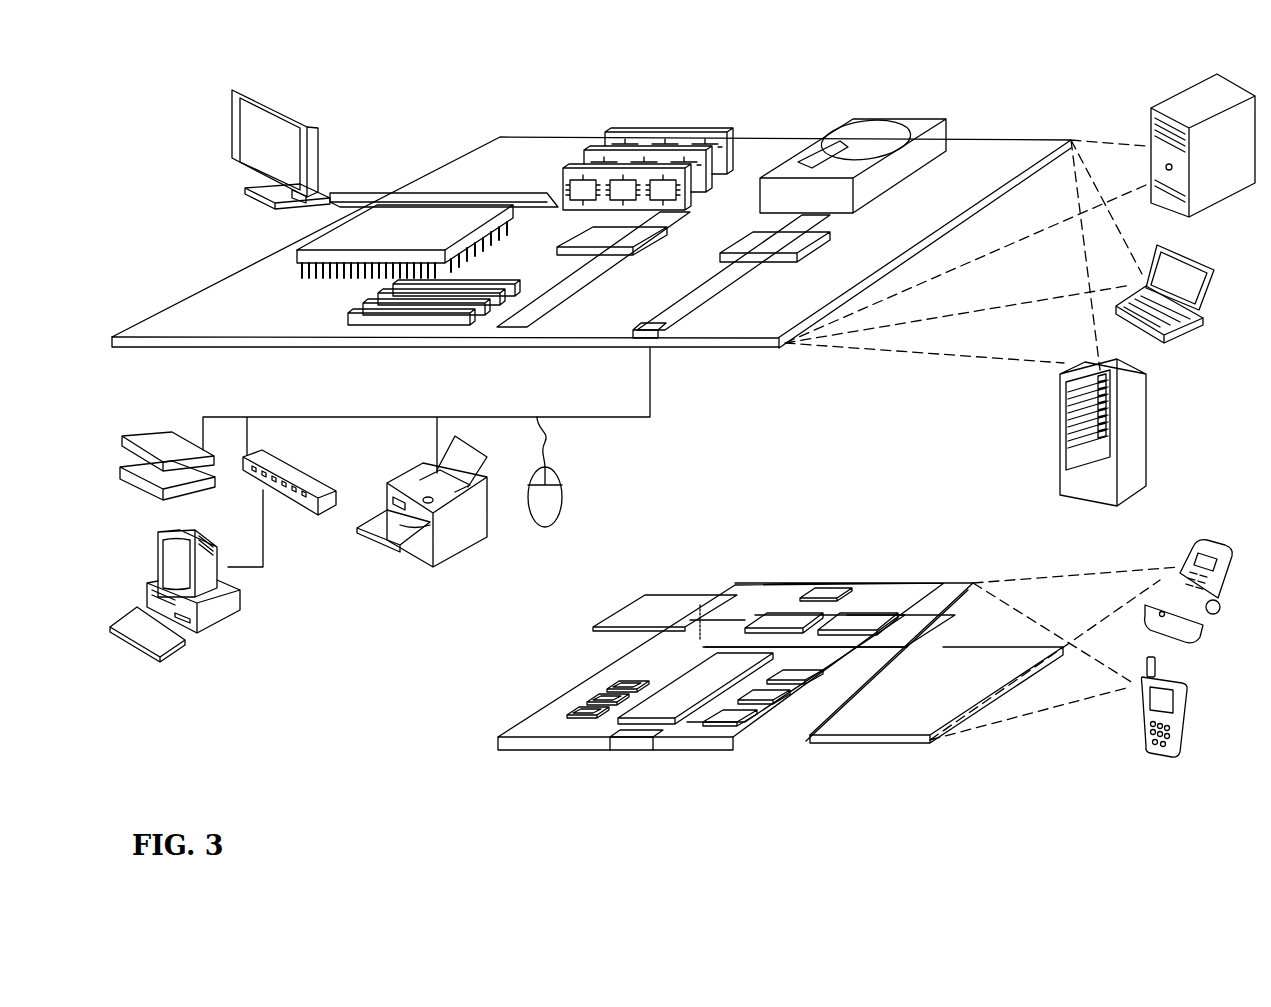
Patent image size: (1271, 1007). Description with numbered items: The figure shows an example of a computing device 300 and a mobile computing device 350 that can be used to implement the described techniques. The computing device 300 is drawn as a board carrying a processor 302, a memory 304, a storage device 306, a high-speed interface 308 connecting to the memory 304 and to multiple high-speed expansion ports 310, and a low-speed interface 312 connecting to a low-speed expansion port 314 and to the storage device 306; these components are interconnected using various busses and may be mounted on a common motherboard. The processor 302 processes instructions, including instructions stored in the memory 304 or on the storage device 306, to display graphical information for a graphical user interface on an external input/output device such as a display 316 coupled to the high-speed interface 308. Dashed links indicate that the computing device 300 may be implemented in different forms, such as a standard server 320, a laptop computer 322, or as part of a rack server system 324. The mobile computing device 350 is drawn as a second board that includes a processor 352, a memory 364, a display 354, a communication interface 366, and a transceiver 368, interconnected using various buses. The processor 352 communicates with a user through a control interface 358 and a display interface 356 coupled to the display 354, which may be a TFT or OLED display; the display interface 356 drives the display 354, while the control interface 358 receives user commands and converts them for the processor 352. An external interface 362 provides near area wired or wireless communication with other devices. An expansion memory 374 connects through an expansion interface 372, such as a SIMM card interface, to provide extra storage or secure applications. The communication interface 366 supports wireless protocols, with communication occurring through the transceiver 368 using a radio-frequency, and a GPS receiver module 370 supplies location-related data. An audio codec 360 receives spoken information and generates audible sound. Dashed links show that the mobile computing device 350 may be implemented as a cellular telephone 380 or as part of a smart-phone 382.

The computing device 300 is at (419, 112).
The processor 302 is at (297, 257).
The memory 304 is at (613, 135).
The storage device 306 is at (848, 122).
The high-speed interface 308 is at (590, 240).
The high-speed expansion ports 310 is at (367, 309).
The low-speed interface 312 is at (757, 240).
The low-speed expansion port 314 is at (655, 340).
The display 316 is at (232, 90).
The standard server 320 is at (1140, 124).
The laptop computer 322 is at (1193, 272).
The rack server system 324 is at (1060, 456).
The mobile computing device 350 is at (470, 752).
The processor 352 is at (670, 707).
The display 354 is at (897, 723).
The display interface 356 is at (737, 717).
The control interface 358 is at (767, 693).
The audio codec 360 is at (795, 673).
The external interface 362 is at (637, 740).
The memory 364 is at (587, 702).
The communication interface 366 is at (783, 620).
The transceiver 368 is at (863, 620).
The GPS receiver module 370 is at (837, 587).
The expansion interface 372 is at (720, 595).
The expansion memory 374 is at (643, 596).
The cellular telephone 380 is at (1180, 557).
The smart-phone 382 is at (1135, 715).